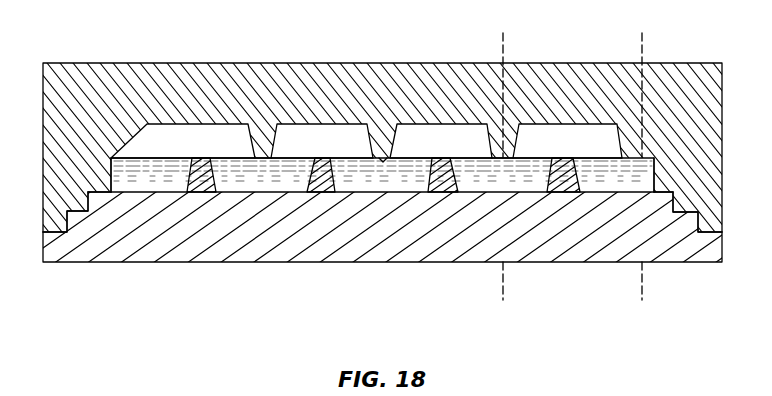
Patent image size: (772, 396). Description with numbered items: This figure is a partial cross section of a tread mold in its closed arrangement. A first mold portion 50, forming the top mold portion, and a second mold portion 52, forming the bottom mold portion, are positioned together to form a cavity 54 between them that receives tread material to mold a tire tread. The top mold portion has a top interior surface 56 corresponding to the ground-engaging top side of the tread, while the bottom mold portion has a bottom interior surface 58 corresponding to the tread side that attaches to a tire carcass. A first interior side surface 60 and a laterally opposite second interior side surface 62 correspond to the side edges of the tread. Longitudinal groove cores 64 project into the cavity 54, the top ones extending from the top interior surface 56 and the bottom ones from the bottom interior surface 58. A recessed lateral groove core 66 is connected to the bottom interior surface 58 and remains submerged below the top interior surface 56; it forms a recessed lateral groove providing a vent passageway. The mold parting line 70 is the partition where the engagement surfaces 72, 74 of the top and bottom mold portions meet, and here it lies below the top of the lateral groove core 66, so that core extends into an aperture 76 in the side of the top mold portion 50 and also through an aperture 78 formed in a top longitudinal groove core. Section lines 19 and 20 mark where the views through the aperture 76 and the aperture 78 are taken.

The first mold portion 50 is at (214, 63).
The second mold portion 52 is at (101, 263).
The cavity 54 is at (227, 150).
The top interior surface 56 is at (328, 131).
The bottom interior surface 58 is at (487, 192).
The first interior side surface 60 is at (151, 131).
The second interior side surface 62 is at (618, 132).
The longitudinal groove core 64 is at (383, 156).
The recessed lateral groove core 66 is at (232, 182).
The mold parting line 70 is at (110, 160).
The engagement surface 72 is at (690, 196).
The engagement surface 74 is at (90, 204).
The aperture 76 is at (640, 167).
The aperture 78 is at (508, 159).
The section line 19 is at (660, 292).
The section line 20 is at (522, 292).